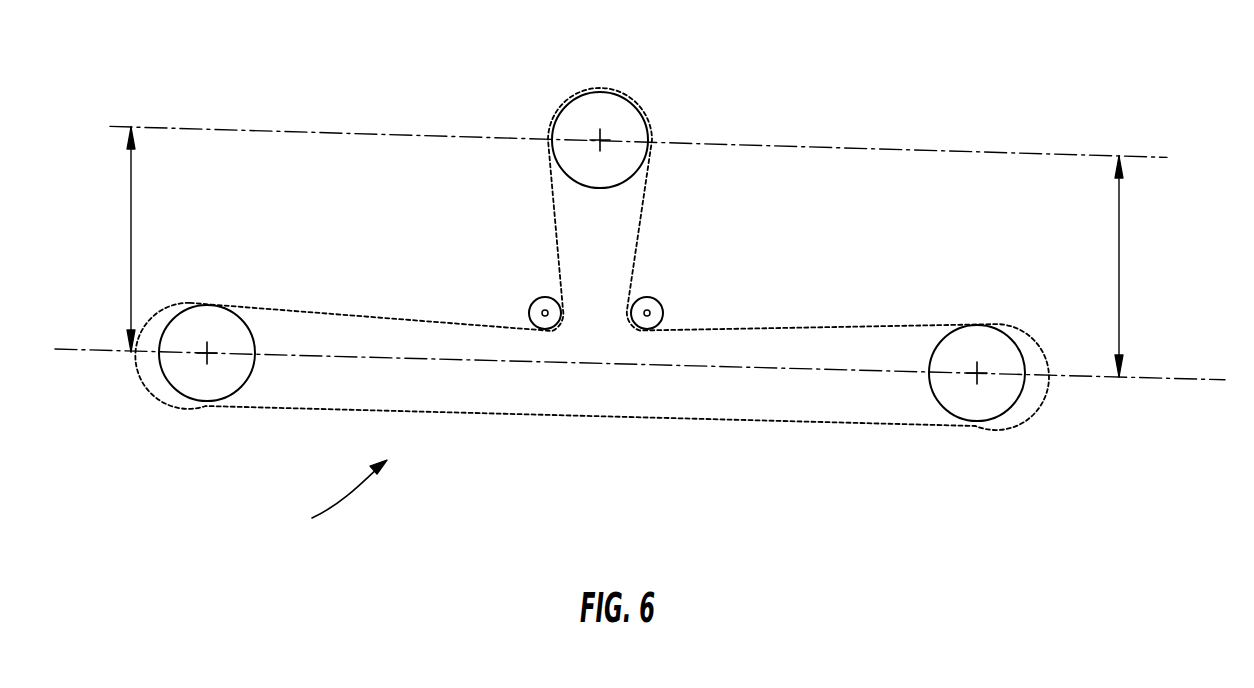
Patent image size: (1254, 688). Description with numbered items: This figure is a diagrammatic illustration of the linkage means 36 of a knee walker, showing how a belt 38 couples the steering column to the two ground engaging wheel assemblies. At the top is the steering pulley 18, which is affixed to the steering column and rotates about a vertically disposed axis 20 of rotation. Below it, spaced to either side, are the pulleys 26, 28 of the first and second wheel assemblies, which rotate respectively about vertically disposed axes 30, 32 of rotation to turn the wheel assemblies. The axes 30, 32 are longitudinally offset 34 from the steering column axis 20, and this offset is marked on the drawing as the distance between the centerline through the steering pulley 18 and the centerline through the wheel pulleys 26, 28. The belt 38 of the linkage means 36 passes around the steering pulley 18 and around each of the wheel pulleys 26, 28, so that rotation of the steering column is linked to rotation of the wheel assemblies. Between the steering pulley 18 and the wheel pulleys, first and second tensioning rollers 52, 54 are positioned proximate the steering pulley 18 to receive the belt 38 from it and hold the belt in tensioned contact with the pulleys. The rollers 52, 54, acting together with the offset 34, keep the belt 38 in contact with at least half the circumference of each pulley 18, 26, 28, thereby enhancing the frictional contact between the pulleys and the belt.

The steering pulley 18 is at (630, 120).
The axis of rotation 20 is at (600, 140).
The pulley 26 is at (987, 397).
The pulley 28 is at (222, 388).
The axis of rotation 30 is at (977, 373).
The axis of rotation 32 is at (207, 355).
The offset 34 is at (131, 241).
The linkage means 36 is at (335, 502).
The belt 38 is at (668, 422).
The first tensioning roller 52 is at (647, 313).
The second tensioning roller 54 is at (535, 297).